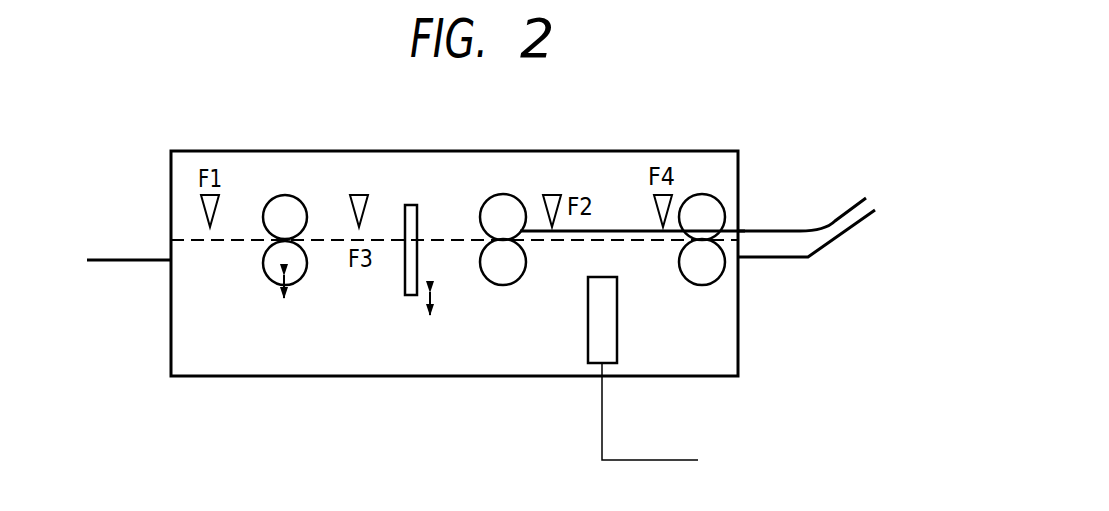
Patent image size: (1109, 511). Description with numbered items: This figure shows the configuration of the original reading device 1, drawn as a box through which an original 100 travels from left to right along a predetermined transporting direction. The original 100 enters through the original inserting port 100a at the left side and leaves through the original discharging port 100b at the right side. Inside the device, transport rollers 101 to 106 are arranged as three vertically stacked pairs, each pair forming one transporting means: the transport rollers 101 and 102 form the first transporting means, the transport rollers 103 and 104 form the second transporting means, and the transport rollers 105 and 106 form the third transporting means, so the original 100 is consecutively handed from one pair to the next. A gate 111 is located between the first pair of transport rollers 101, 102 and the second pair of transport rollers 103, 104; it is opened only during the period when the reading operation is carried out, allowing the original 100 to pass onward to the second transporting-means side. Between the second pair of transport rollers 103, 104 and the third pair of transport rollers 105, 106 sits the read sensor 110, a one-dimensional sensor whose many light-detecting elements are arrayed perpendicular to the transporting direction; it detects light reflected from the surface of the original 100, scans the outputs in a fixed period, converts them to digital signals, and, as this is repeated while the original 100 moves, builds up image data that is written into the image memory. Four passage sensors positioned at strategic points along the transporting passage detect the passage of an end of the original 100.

The original reading device 1 is at (390, 382).
The original 100 is at (835, 223).
The original inserting port 100a is at (171, 240).
The original discharging port 100b is at (739, 231).
The transport roller 101 is at (297, 196).
The transport roller 102 is at (269, 279).
The transport roller 103 is at (512, 195).
The transport roller 104 is at (517, 280).
The transport roller 105 is at (707, 195).
The transport roller 106 is at (694, 283).
The read sensor 110 is at (588, 347).
The gate 111 is at (405, 272).